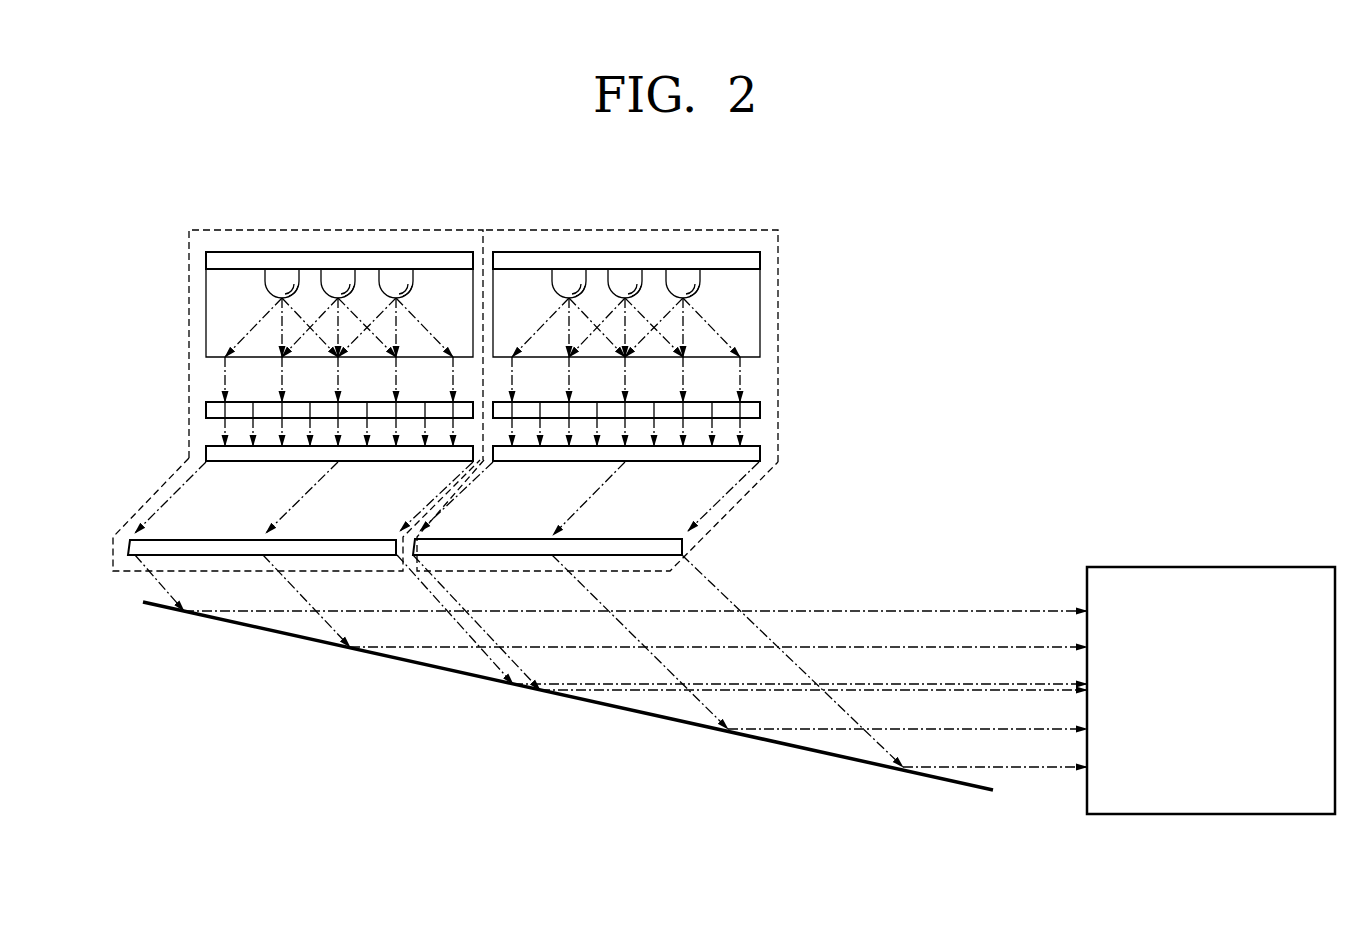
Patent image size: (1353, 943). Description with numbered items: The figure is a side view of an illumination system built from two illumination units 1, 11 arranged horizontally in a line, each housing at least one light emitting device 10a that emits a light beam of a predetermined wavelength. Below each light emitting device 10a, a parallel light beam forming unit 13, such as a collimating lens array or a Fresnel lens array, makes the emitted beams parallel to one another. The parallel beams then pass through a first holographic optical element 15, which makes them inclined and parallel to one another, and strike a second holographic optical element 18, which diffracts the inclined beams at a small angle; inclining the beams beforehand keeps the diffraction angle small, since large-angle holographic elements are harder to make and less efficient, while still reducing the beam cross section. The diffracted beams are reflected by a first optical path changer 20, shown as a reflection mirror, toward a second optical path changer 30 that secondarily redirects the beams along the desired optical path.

The illumination unit 1 is at (189, 345).
The illumination unit 11 is at (778, 348).
The light emitting device 10a is at (393, 252).
The parallel light beam forming unit 13 is at (206, 409).
The first holographic optical element 15 is at (206, 452).
The second holographic optical element 18 is at (128, 541).
The first optical path changer 20 is at (569, 700).
The second optical path changer 30 is at (1215, 565).